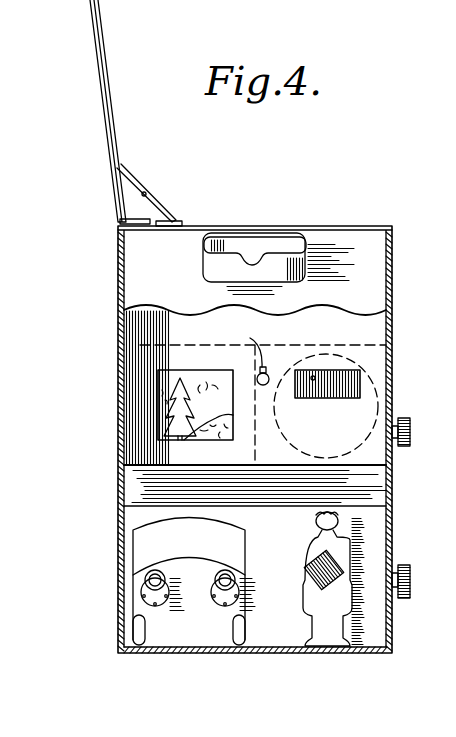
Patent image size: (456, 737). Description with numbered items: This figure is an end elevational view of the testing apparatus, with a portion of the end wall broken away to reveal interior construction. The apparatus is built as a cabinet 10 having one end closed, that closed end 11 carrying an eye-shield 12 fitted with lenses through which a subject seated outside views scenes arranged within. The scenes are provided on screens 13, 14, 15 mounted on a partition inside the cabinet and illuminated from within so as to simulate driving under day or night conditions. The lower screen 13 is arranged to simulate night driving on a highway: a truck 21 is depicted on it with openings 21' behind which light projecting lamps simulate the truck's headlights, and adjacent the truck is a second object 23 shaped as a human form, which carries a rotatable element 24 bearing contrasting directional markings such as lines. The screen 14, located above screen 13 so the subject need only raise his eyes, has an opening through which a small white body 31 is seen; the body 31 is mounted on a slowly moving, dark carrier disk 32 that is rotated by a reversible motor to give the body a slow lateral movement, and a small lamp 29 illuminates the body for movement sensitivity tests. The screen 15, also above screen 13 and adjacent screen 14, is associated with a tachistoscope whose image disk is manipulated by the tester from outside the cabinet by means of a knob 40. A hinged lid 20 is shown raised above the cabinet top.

The cabinet 10 is at (422, 267).
The closed end 11 is at (125, 298).
The eye-shield 12 is at (283, 237).
The screen 13 is at (277, 636).
The screen 14 is at (355, 388).
The screen 15 is at (160, 393).
The hinged lid 20 is at (105, 128).
The truck 21 is at (161, 582).
The openings 21' is at (164, 590).
The second object 23 is at (355, 535).
The rotatable element 24 is at (337, 563).
The small lamp 29 is at (420, 586).
The small white body 31 is at (311, 376).
The carrier disk 32 is at (300, 440).
The knob 40 is at (411, 432).